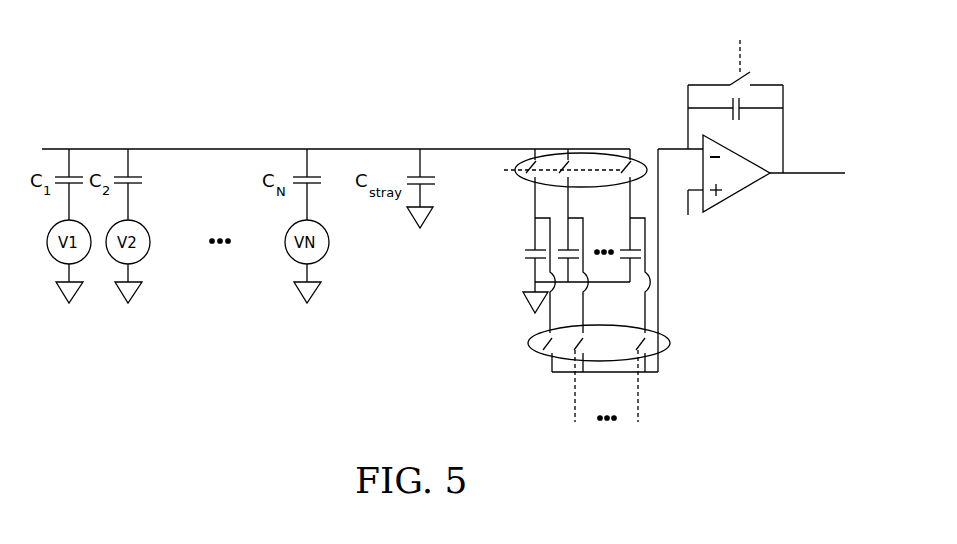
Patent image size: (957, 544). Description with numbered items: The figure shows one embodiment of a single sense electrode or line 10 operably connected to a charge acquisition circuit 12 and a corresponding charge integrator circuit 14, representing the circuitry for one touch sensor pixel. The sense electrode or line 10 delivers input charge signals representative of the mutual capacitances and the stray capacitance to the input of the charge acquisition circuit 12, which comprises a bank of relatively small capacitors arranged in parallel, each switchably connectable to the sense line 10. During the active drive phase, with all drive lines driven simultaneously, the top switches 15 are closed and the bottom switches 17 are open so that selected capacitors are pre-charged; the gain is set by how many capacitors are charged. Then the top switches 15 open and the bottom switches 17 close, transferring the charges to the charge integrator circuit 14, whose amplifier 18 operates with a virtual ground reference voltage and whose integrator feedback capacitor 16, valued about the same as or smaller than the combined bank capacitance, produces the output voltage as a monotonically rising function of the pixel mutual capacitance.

The sense electrode or line 10 is at (193, 148).
The charge acquisition circuit 12 is at (505, 326).
The charge integrator circuit 14 is at (709, 60).
The top switches 15 is at (642, 162).
The integrator feedback capacitor 16 is at (742, 103).
The bottom switches 17 is at (668, 340).
The operational amplifier 18 is at (747, 191).